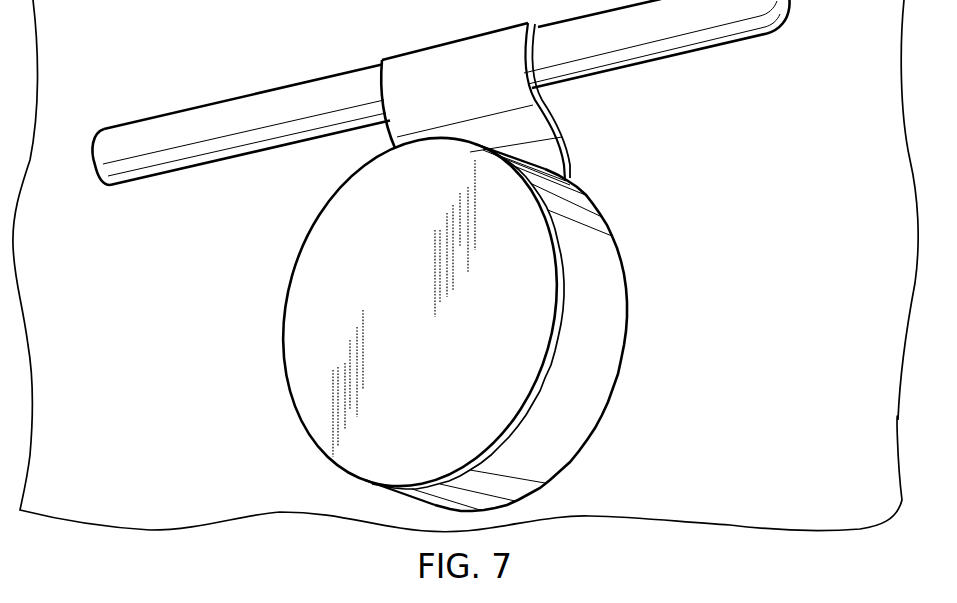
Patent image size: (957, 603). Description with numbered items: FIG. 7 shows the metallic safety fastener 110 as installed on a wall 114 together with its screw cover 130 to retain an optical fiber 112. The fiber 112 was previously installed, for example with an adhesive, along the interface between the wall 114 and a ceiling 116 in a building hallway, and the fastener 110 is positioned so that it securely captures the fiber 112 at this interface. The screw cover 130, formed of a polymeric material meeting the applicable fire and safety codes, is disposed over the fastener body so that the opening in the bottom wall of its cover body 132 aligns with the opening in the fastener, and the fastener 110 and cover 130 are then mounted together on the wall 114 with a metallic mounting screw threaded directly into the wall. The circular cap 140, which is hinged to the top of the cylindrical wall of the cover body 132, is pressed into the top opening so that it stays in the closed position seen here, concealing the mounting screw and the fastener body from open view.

The metallic safety fastener 110 is at (572, 139).
The optical fiber 112 is at (675, 40).
The wall 114 is at (242, 253).
The ceiling 116 is at (300, 45).
The screw cover 130 is at (616, 390).
The cover body 132 is at (612, 314).
The circular cap 140 is at (540, 256).